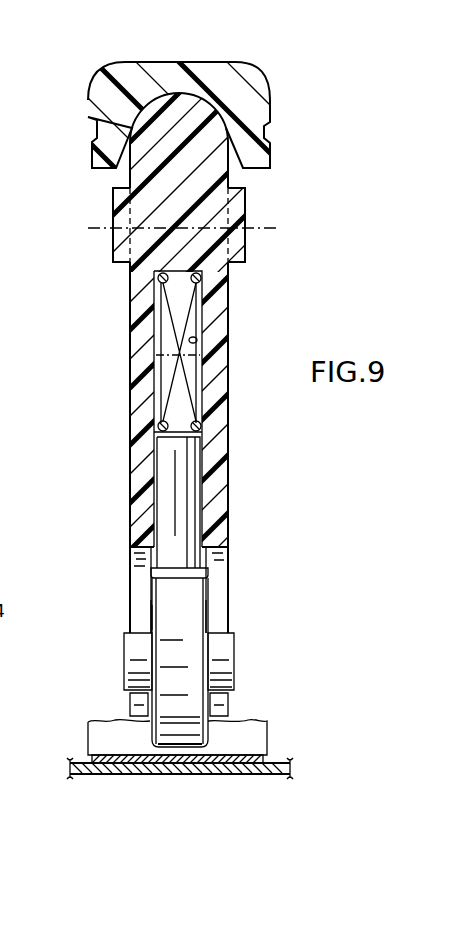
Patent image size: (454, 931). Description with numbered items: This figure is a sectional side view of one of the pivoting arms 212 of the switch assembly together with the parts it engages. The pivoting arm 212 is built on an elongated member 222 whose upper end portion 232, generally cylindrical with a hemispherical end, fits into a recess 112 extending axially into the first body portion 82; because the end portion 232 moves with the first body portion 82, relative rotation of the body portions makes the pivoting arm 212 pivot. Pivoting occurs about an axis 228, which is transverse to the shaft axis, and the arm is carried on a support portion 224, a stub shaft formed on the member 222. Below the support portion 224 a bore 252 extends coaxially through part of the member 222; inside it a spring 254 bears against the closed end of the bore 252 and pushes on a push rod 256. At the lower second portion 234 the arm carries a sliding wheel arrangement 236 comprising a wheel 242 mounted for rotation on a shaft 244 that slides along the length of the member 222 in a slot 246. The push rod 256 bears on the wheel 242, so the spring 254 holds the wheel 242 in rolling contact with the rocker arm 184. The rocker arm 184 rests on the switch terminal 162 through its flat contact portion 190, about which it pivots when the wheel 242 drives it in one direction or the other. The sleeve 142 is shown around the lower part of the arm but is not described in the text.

The first body portion 82 is at (243, 103).
The recess 112 is at (245, 156).
The pivoting arm 212 is at (227, 450).
The elongated member 222 is at (227, 450).
The end portion 232 is at (147, 160).
The support portion 224 is at (238, 262).
The axis 228 is at (258, 222).
The spring 254 is at (178, 323).
The bore 252 is at (197, 340).
The push rod 256 is at (180, 512).
The second portion 234 is at (230, 560).
The sliding wheel arrangement 236 is at (217, 599).
The sleeve 142 is at (190, 612).
The wheel 242 is at (158, 617).
The shaft 244 is at (138, 698).
The slot 246 is at (221, 708).
The rocker arm 184 is at (263, 733).
The flat contact portion 190 is at (267, 758).
The switch terminal 162 is at (177, 766).